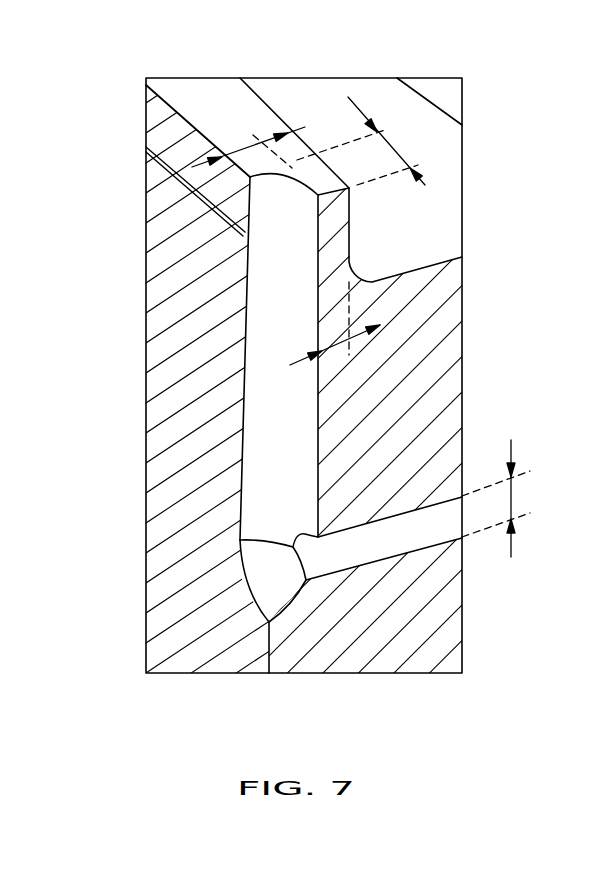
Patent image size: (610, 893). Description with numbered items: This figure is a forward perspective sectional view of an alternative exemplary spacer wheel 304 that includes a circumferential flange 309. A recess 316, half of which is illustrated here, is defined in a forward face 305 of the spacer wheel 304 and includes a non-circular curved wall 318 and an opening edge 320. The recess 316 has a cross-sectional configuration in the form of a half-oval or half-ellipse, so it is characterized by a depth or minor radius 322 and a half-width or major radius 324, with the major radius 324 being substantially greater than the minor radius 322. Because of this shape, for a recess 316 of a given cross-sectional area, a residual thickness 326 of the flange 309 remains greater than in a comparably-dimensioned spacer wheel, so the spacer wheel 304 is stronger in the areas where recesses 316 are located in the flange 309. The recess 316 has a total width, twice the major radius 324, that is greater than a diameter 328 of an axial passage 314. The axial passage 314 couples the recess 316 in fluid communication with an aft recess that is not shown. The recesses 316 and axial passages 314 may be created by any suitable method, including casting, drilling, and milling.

The spacer wheel 304 is at (358, 643).
The forward face 305 is at (185, 273).
The circumferential flange 309 is at (340, 242).
The axial passage 314 is at (373, 537).
The recess 316 is at (277, 322).
The non-circular curved wall 318 is at (297, 442).
The opening edge 320 is at (222, 235).
The minor radius 322 is at (302, 128).
The major radius 324 is at (348, 97).
The residual thickness 326 is at (378, 326).
The diameter 328 is at (512, 441).